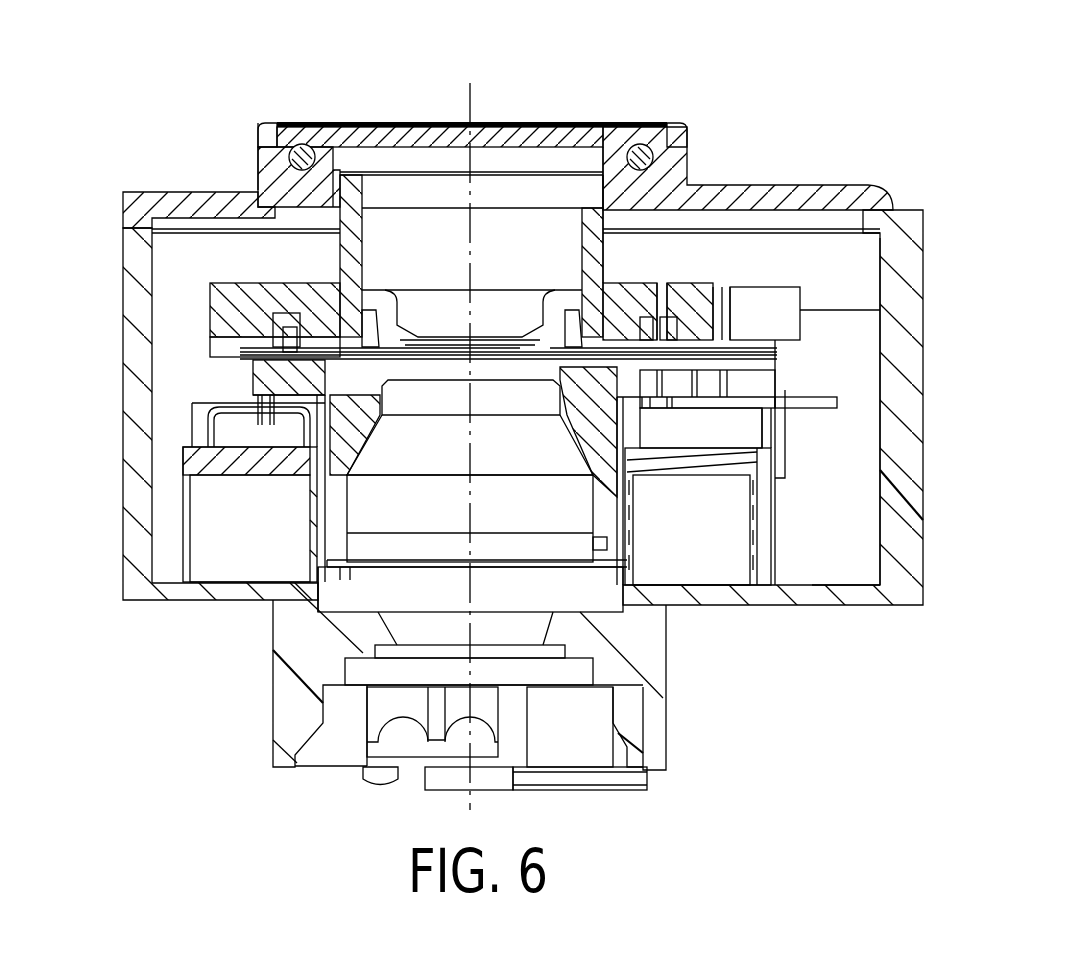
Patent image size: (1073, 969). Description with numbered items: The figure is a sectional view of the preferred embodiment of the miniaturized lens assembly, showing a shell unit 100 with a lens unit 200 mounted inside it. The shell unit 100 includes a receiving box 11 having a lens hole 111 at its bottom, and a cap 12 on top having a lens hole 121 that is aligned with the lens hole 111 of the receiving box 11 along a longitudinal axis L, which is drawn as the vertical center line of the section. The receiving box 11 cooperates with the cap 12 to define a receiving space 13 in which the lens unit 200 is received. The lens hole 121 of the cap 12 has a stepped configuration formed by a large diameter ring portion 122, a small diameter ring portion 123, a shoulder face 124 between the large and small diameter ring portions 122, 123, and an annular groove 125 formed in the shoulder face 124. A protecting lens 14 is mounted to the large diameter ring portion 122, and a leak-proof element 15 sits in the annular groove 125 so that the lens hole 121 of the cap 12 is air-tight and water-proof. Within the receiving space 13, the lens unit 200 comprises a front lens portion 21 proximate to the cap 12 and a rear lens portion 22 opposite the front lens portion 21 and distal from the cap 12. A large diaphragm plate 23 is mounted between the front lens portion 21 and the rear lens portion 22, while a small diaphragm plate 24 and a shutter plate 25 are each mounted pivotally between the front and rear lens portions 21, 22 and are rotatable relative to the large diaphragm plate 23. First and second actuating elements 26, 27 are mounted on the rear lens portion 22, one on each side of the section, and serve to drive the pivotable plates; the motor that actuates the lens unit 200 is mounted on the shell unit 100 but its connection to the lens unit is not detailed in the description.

The shell unit 100 is at (922, 503).
The receiving box 11 is at (893, 448).
The lens hole 111 is at (520, 632).
The cap 12 is at (833, 186).
The lens hole 121 is at (525, 122).
The large diameter ring portion 122 is at (267, 122).
The small diameter ring portion 123 is at (257, 178).
The shoulder face 124 is at (258, 176).
The annular groove 125 is at (333, 122).
The receiving space 13 is at (813, 548).
The protecting lens 14 is at (585, 128).
The leak-proof element 15 is at (647, 124).
The lens unit 200 is at (234, 268).
The front lens portion 21 is at (210, 283).
The rear lens portion 22 is at (333, 483).
The large diaphragm plate 23 is at (681, 338).
The small diaphragm plate 24 is at (720, 382).
The shutter plate 25 is at (235, 323).
The first actuating element 26 is at (725, 517).
The second actuating element 27 is at (233, 487).
The longitudinal axis L is at (453, 122).